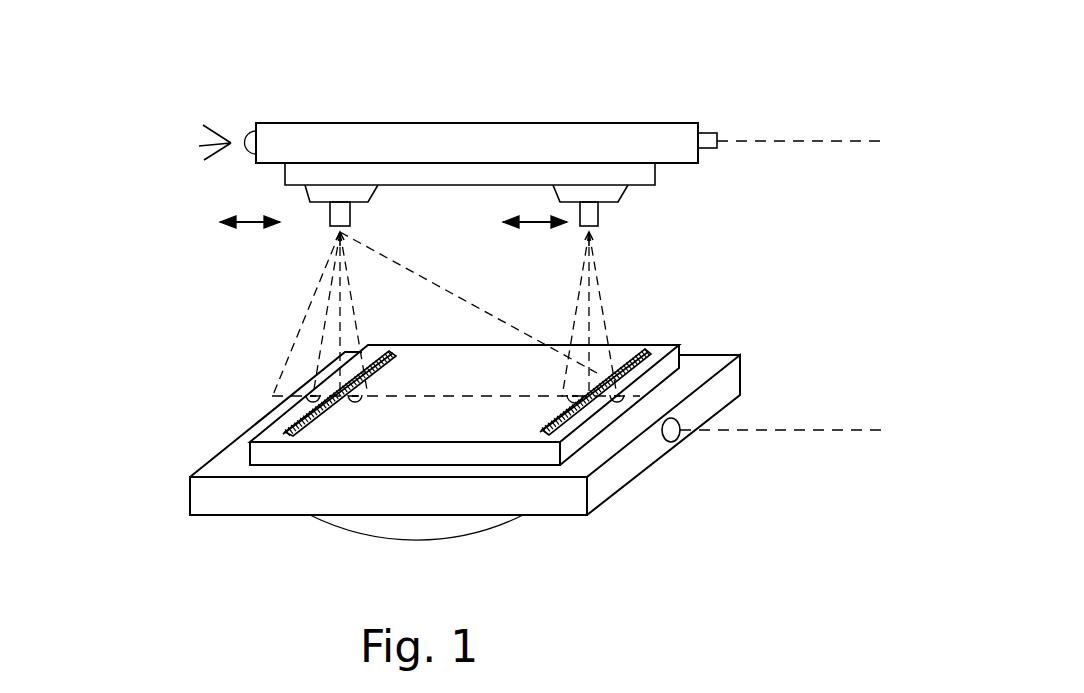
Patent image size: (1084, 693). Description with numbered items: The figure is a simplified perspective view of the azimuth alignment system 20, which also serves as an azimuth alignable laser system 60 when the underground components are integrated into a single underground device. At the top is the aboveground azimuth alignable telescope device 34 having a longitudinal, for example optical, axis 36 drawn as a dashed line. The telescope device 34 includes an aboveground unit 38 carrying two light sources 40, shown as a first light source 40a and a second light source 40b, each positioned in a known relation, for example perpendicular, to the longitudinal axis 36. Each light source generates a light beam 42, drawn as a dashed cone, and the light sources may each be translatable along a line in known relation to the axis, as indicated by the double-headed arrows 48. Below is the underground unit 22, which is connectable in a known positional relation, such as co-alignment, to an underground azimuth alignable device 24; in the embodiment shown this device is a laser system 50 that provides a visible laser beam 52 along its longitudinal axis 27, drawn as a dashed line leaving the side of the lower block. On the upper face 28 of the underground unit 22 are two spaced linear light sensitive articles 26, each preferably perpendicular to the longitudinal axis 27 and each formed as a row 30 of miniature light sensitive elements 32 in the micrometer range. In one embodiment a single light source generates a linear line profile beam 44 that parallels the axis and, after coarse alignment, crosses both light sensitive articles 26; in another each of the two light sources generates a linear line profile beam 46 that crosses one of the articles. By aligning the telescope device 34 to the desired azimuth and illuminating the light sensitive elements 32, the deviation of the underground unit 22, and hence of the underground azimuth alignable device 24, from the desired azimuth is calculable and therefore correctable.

The azimuth alignment system 20 is at (80, 247).
The azimuth alignable laser system 60 is at (80, 276).
The aboveground azimuth alignable telescope device 34 is at (438, 127).
The aboveground unit 38 is at (550, 150).
The longitudinal axis 36 is at (790, 132).
The light source 40 is at (466, 193).
The first light source 40a is at (334, 212).
The second light source 40b is at (595, 214).
The arrows 48 is at (250, 224).
The light beam 42 is at (348, 288).
The underground unit 22 is at (498, 444).
The upper face 28 is at (453, 428).
The underground azimuth alignable device 24 is at (465, 474).
The laser system 50 is at (562, 500).
The longitudinal axis 27 is at (773, 462).
The visible laser beam 52 is at (757, 432).
The linear light sensitive article 26 is at (362, 352).
The row 30 is at (468, 392).
The light sensitive elements 32 is at (286, 428).
The linear line profile beam 44 is at (420, 398).
The linear line profile beam 46 is at (340, 398).